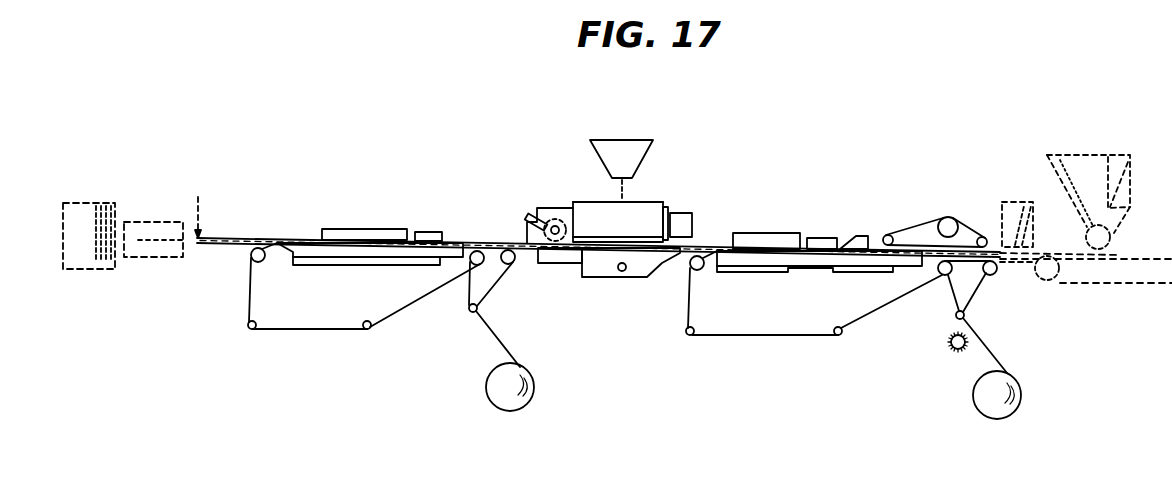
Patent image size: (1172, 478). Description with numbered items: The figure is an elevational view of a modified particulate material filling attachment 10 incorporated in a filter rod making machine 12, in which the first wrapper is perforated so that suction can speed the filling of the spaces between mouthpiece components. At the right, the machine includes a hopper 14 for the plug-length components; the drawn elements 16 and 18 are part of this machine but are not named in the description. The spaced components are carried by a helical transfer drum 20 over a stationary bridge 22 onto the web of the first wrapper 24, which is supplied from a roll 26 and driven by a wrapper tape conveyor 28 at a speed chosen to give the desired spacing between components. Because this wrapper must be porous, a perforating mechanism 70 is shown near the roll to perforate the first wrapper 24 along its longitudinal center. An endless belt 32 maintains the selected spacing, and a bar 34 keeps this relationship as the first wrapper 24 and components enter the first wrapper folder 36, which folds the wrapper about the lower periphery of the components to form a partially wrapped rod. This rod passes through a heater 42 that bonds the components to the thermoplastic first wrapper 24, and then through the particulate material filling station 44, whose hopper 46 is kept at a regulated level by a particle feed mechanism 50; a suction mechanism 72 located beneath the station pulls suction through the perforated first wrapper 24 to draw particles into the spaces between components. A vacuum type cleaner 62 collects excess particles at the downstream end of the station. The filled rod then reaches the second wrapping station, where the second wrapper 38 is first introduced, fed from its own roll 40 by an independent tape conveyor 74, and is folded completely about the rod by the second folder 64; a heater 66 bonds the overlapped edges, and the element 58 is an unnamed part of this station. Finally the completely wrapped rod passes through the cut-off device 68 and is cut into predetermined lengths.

The particulate material filling attachment 10 is at (718, 142).
The filter rod making machine 12 is at (1054, 149).
The hopper 14 is at (1110, 158).
The feed roller 16 is at (1112, 240).
The conveyor 18 is at (1108, 259).
The helical transfer drum 20 is at (1010, 203).
The stationary bridge 22 is at (1013, 276).
The first wrapper 24 is at (952, 276).
The roll 26 is at (978, 400).
The wrapper tape conveyor 28 is at (884, 318).
The endless belt 32 is at (921, 220).
The bar 34 is at (846, 240).
The first wrapper folder 36 is at (820, 238).
The second wrapper 38 is at (488, 327).
The supply roll 40 is at (500, 380).
The heater 42 is at (765, 233).
The particulate material filling station 44 is at (594, 199).
The particulate material hopper 46 is at (640, 203).
The particle feed mechanism 50 is at (630, 146).
The cutter 58 is at (685, 213).
The vacuum type cleaner 62 is at (533, 216).
The second folder 64 is at (437, 232).
The heater 66 is at (358, 229).
The cut-off device 68 is at (203, 207).
The perforating mechanism 70 is at (953, 350).
The suction mechanism 72 is at (600, 282).
The tape conveyor 74 is at (283, 333).